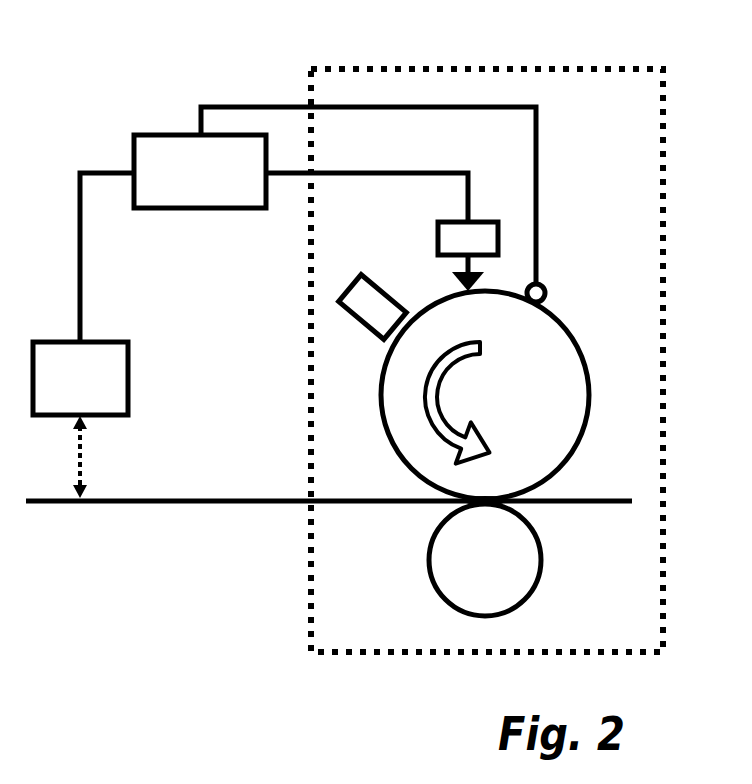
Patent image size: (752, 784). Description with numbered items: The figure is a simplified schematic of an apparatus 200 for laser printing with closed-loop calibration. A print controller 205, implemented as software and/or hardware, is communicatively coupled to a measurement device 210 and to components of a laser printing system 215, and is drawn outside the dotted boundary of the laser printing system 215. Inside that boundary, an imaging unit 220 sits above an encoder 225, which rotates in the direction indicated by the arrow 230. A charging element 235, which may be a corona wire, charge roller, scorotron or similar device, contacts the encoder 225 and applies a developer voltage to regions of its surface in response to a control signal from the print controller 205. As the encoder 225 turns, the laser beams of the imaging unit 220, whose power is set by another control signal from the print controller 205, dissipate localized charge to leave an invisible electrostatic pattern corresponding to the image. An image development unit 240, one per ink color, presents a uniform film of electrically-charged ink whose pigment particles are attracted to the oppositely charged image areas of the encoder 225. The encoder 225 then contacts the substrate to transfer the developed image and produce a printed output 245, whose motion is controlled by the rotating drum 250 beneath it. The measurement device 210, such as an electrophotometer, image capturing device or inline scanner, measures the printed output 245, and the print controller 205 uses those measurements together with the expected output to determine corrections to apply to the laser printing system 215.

The apparatus 200 is at (95, 76).
The print controller 205 is at (200, 171).
The measurement device 210 is at (80, 378).
The laser printing system 215 is at (348, 69).
The imaging unit 220 is at (438, 238).
The encoder 225 is at (378, 397).
The arrow 230 is at (450, 382).
The charging element 235 is at (548, 290).
The image development unit 240 is at (360, 323).
The printed output 245 is at (260, 505).
The rotating drum 250 is at (425, 562).